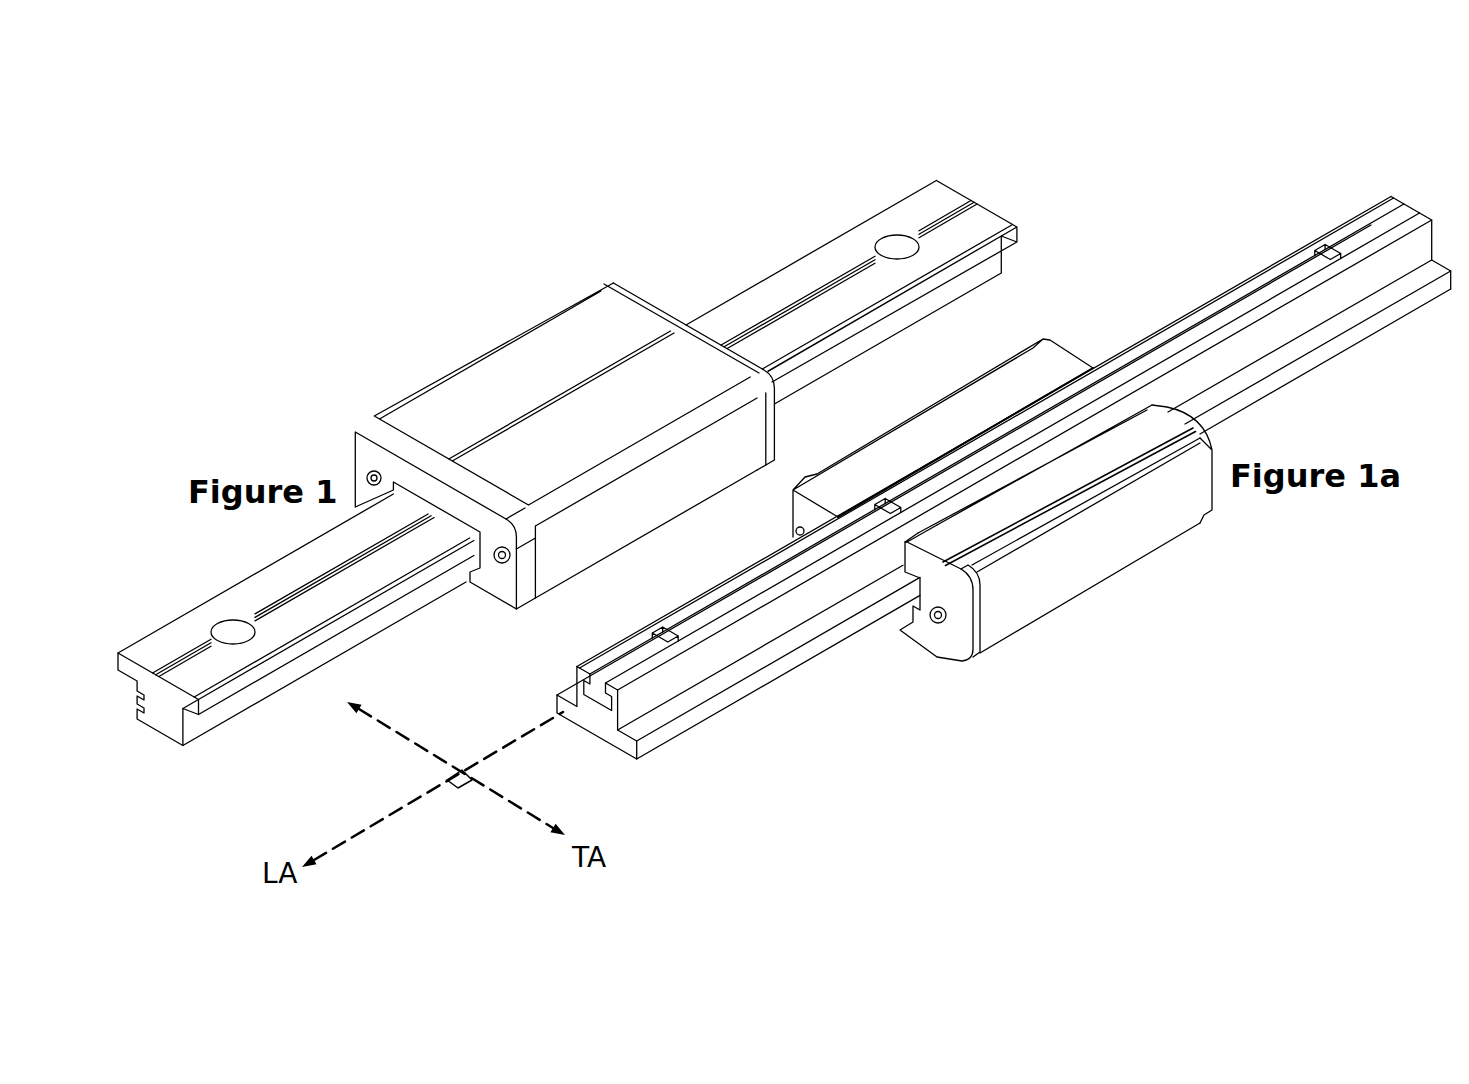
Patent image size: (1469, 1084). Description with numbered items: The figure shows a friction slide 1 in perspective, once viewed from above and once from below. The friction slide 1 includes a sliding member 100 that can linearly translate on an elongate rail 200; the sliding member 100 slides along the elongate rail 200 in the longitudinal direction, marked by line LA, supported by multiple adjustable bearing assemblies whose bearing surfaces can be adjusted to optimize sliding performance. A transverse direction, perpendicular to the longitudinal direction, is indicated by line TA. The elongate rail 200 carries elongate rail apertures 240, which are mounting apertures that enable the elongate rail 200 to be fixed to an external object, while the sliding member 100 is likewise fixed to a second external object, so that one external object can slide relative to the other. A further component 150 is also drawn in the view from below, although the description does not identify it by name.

In FIG. 1, the friction slide 1 is at (518, 218).
In FIG. 1, the sliding member 100 is at (505, 338).
In FIG. 1A, the carriage 150 is at (966, 658).
In FIG. 1A, the elongate rail 200 is at (1237, 283).
In FIG. 1, the elongate rail apertures 240 is at (882, 237).